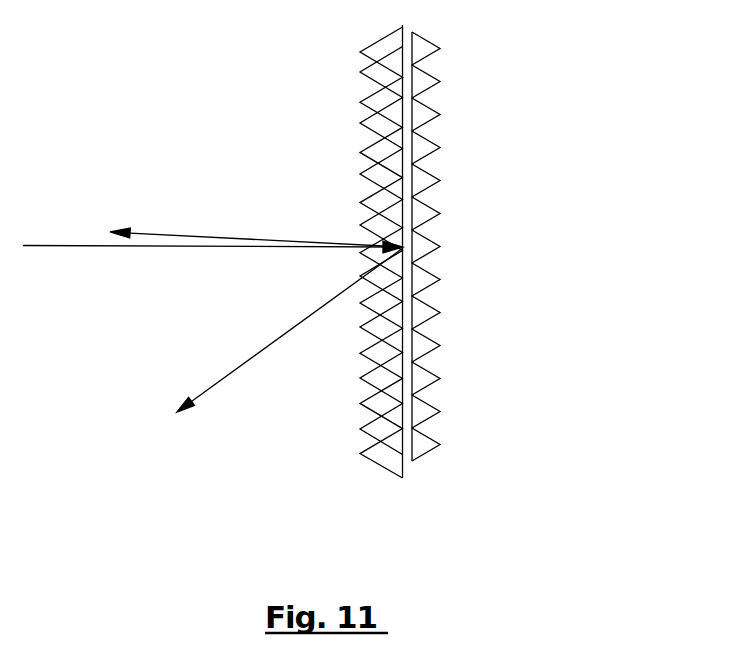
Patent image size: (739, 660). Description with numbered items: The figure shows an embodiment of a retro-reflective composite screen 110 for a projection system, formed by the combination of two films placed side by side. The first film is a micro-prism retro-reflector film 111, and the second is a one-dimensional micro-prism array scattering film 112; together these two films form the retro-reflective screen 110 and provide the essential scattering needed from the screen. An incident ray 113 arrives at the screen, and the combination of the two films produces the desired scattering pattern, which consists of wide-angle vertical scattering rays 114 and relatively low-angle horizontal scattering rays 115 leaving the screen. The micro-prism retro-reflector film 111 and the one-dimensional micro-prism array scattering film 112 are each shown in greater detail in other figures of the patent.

The composite screen 110 is at (433, 506).
The micro-prism retro-reflector film 111 is at (335, 395).
The one-dimensional micro-prism array scattering film 112 is at (467, 262).
The incident ray 113 is at (135, 262).
The wide-angle vertical scattering rays 114 is at (288, 312).
The low-angle horizontal scattering rays 115 is at (223, 230).